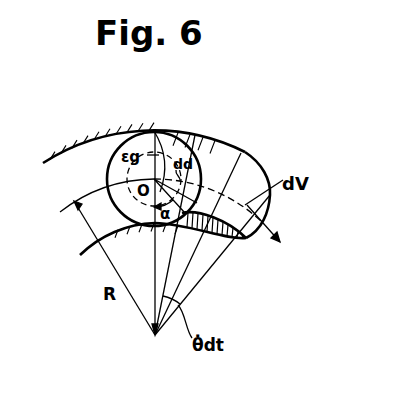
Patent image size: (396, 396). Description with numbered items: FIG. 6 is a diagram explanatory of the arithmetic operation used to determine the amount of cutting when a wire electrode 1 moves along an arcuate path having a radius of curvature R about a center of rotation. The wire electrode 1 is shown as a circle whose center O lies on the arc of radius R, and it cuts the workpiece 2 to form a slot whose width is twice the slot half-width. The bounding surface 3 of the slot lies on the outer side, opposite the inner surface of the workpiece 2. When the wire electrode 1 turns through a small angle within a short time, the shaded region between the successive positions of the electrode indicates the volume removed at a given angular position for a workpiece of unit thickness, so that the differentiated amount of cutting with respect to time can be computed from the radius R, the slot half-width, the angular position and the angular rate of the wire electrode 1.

The wire electrode 1 is at (173, 133).
The workpiece 2 is at (79, 253).
The outer housing wall 3 is at (90, 146).